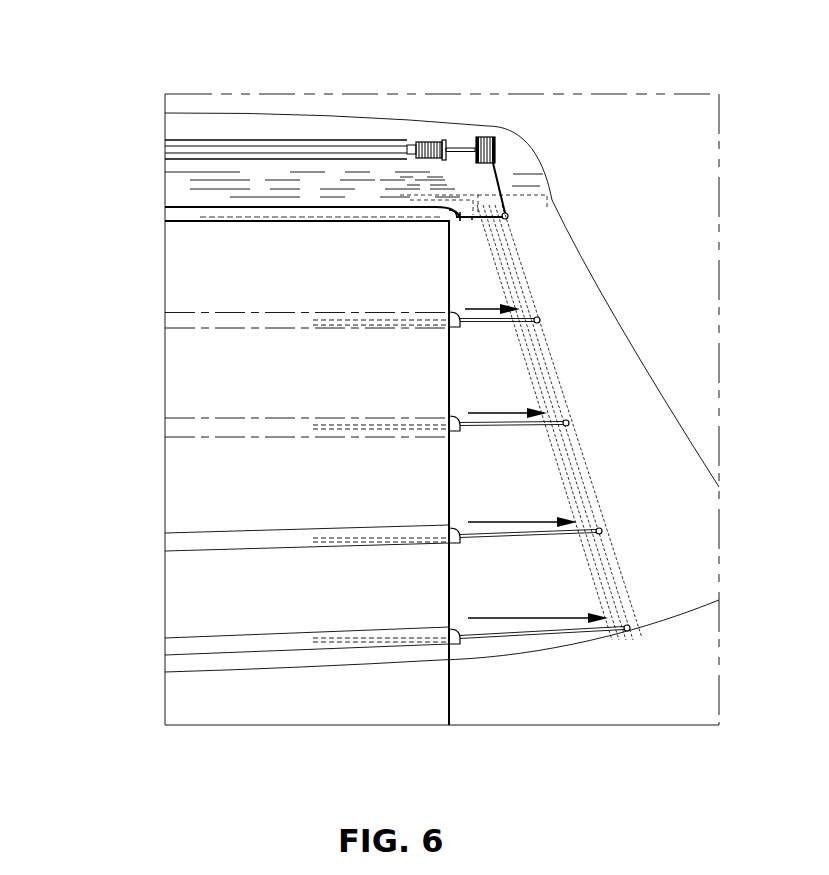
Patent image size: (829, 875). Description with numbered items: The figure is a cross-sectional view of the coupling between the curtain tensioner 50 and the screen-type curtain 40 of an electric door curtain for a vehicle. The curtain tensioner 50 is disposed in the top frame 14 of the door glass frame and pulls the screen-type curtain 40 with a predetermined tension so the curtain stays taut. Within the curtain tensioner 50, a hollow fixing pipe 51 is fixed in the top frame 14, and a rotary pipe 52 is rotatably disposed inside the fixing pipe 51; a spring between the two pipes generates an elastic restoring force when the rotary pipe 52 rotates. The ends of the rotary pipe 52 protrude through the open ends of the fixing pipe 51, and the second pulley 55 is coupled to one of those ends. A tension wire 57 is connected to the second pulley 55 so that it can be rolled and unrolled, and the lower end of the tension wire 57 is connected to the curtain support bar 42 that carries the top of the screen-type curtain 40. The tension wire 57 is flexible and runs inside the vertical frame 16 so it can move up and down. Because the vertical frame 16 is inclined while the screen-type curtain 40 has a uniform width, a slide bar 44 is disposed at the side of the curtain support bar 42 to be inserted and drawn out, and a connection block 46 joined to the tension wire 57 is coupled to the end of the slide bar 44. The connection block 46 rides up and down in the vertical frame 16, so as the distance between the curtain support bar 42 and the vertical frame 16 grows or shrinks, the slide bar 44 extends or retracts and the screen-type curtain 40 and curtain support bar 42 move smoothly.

The top frame 14 is at (192, 110).
The vertical frame 16 is at (550, 358).
The screen-type curtain 40 is at (200, 373).
The curtain support bar 42 is at (175, 212).
The slide bar 44 is at (470, 220).
The connection block 46 is at (508, 215).
The curtain tensioner 50 is at (272, 112).
The fixing pipe 51 is at (334, 140).
The rotary pipe 52 is at (384, 152).
The second pulley 55 is at (494, 132).
The tension wire 57 is at (500, 180).